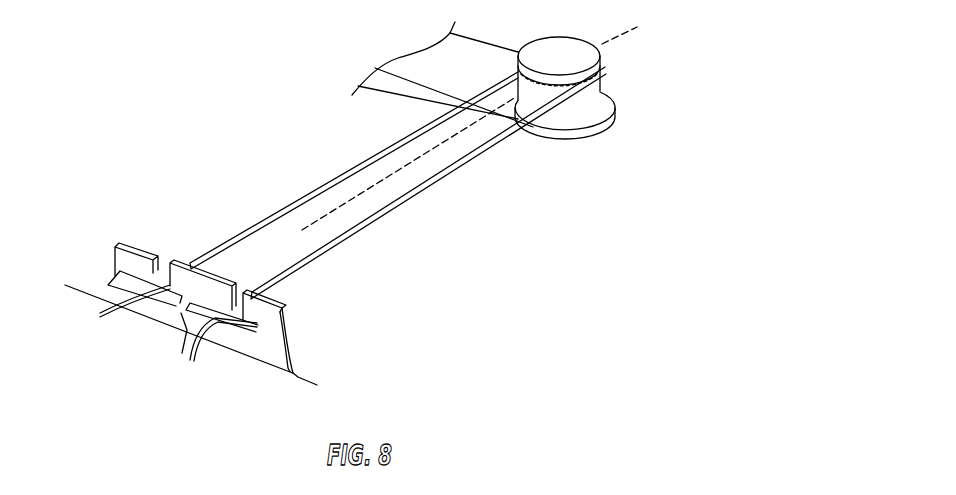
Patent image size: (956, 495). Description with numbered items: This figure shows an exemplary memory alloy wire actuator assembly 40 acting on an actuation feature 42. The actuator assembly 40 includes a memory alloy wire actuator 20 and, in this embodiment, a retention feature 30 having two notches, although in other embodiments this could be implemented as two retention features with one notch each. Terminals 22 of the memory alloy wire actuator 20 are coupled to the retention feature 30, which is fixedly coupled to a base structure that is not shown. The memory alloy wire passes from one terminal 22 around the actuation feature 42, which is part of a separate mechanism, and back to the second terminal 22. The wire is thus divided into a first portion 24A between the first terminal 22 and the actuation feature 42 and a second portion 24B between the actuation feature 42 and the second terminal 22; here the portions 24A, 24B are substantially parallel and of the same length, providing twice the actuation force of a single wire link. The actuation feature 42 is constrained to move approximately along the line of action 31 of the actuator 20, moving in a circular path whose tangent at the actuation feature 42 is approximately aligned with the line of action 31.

The memory alloy wire actuator assembly 40 is at (150, 68).
The memory alloy wire actuator 20 is at (282, 130).
The first portion of the memory alloy wire 24A is at (292, 202).
The second portion of the memory alloy wire 24B is at (425, 190).
The line of action 31 is at (350, 200).
The actuation feature 42 is at (555, 43).
The retention feature 30 is at (137, 238).
The terminals 22 is at (97, 297).